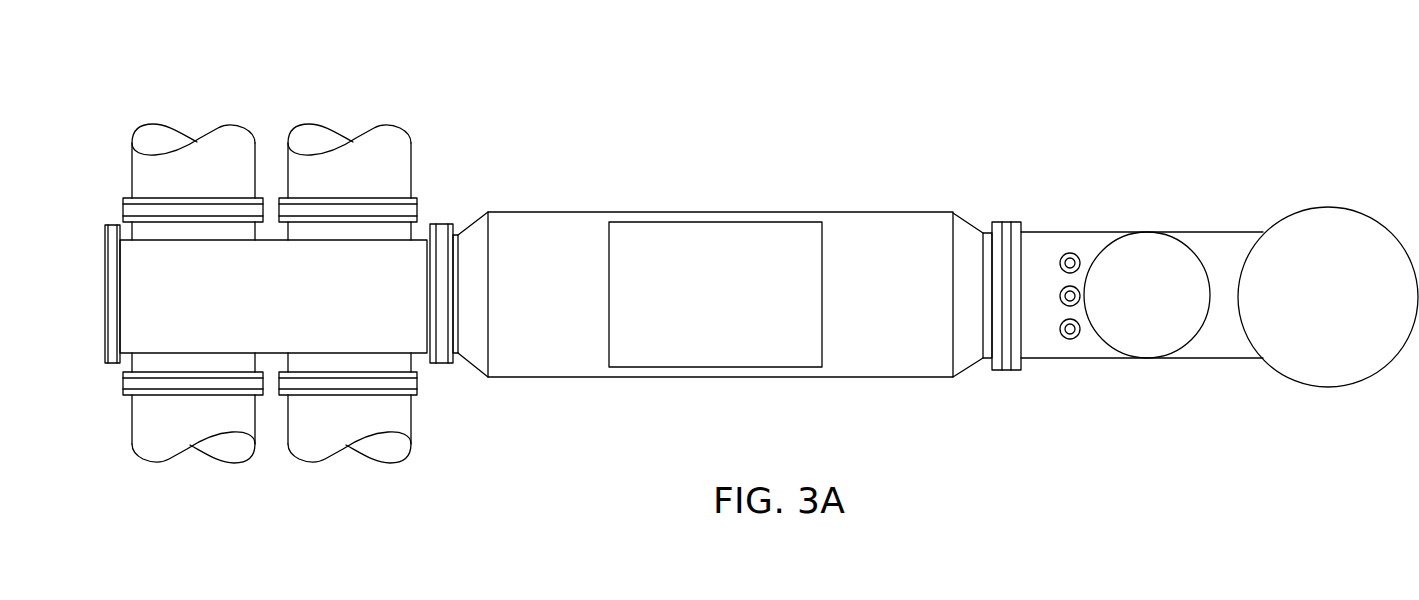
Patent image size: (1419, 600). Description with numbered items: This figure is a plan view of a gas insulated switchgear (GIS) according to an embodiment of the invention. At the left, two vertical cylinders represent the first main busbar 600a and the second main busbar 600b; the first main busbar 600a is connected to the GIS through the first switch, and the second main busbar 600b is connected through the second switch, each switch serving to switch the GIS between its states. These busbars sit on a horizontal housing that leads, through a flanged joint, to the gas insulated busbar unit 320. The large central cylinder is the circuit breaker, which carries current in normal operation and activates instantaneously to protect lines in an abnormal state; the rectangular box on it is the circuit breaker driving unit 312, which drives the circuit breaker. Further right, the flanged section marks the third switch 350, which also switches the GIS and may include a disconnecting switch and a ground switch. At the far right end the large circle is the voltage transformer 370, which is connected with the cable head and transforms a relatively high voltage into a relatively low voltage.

The first main busbar 600a is at (218, 135).
The second main busbar 600b is at (378, 135).
The gas insulated busbar unit 320 is at (418, 245).
The circuit breaker driving unit 312 is at (710, 230).
The third switch 350 is at (1095, 232).
The voltage transformer 370 is at (1328, 217).